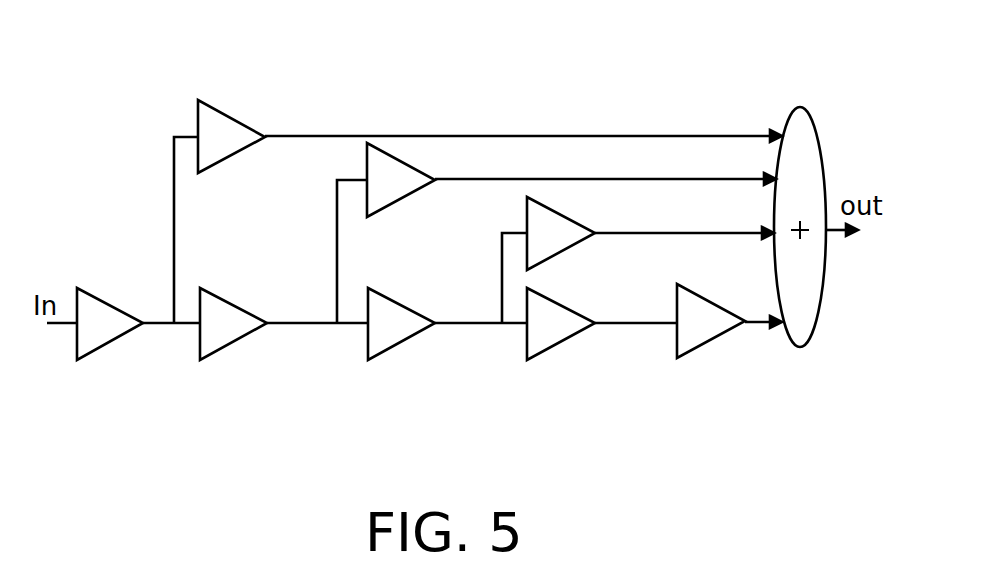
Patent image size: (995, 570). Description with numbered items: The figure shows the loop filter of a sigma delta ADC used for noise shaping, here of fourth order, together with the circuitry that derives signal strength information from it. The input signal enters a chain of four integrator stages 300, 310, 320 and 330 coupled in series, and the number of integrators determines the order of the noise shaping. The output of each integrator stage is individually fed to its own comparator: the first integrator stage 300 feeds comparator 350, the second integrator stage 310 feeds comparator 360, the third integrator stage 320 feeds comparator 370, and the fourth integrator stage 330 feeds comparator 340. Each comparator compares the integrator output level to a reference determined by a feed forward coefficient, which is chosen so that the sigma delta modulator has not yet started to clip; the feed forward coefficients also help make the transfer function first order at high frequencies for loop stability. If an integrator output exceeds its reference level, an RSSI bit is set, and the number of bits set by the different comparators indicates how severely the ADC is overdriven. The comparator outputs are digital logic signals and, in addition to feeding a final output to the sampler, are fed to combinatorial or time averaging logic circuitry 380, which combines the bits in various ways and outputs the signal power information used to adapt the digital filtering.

The integrator stage 300 is at (109, 344).
The integrator stage 310 is at (230, 344).
The integrator stage 320 is at (401, 344).
The integrator stage 330 is at (559, 344).
The comparator 340 is at (714, 343).
The comparator 350 is at (231, 110).
The comparator 360 is at (400, 200).
The comparator 370 is at (563, 255).
The combinatorial or time averaging logic circuitry 380 is at (799, 106).